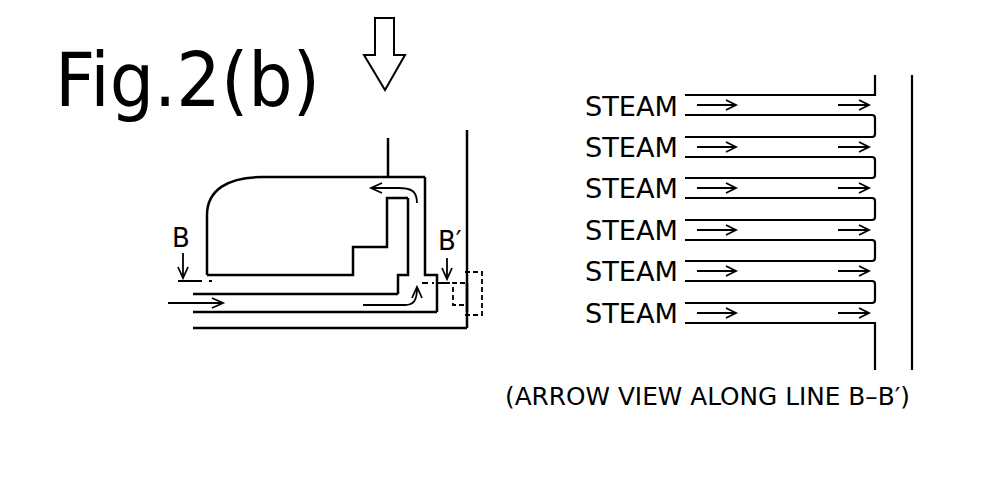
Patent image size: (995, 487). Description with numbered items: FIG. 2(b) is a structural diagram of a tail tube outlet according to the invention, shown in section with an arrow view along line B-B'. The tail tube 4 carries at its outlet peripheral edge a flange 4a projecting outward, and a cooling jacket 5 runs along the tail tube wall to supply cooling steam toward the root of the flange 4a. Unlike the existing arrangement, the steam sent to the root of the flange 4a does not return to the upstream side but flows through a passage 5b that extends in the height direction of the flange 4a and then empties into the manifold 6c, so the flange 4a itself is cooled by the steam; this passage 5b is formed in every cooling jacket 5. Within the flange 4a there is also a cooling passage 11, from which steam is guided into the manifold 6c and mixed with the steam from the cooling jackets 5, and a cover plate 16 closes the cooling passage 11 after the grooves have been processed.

The tail tube 4 is at (243, 330).
The flange 4a is at (448, 183).
The cooling jacket 5 is at (321, 302).
The passage 5b is at (415, 218).
The manifold 6c is at (245, 212).
The cooling passage 11 is at (465, 296).
The cover plate 16 is at (482, 290).